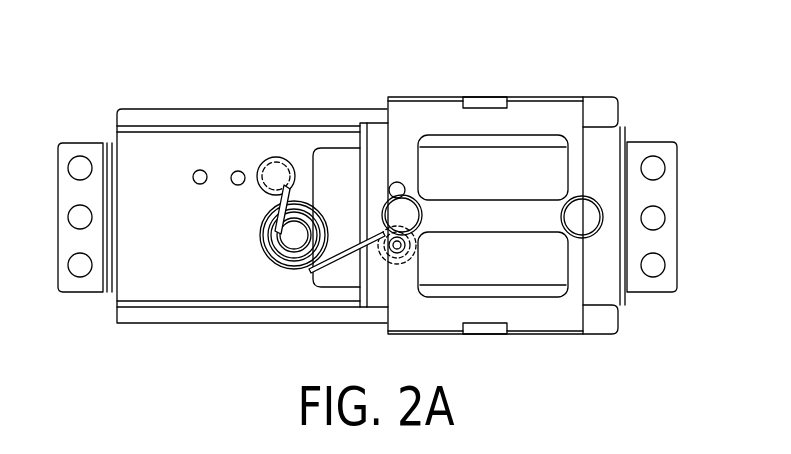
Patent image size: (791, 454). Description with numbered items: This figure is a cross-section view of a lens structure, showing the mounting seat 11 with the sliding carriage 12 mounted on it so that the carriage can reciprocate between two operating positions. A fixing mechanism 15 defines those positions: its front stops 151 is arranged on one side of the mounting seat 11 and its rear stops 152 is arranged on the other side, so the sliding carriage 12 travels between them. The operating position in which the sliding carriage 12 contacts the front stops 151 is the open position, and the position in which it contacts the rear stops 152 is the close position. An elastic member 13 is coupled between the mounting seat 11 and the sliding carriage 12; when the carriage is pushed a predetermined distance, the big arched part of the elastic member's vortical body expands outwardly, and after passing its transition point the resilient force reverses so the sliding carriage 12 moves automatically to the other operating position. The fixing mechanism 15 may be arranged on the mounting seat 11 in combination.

The mounting seat 11 is at (270, 110).
The sliding carriage 12 is at (446, 97).
The elastic member 13 is at (282, 277).
The fixing mechanism 15 is at (367, 156).
The front stops 151 is at (653, 142).
The rear stops 152 is at (83, 143).